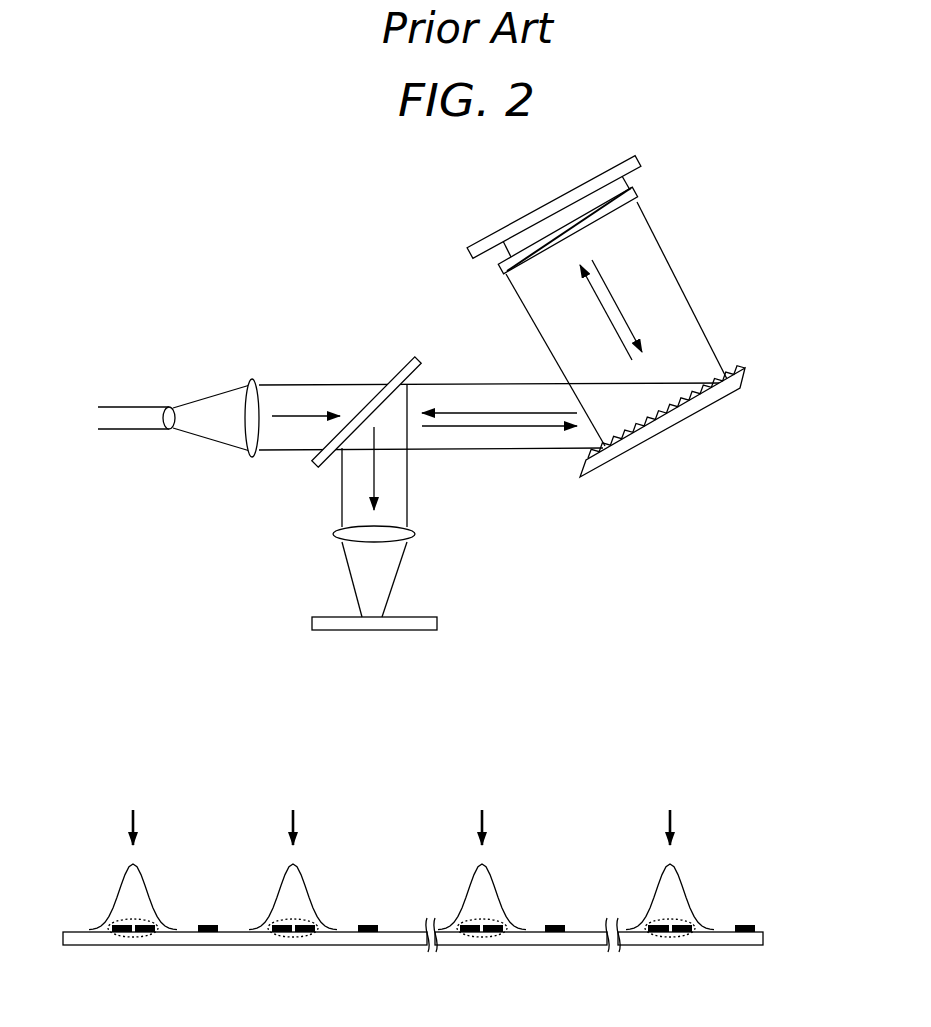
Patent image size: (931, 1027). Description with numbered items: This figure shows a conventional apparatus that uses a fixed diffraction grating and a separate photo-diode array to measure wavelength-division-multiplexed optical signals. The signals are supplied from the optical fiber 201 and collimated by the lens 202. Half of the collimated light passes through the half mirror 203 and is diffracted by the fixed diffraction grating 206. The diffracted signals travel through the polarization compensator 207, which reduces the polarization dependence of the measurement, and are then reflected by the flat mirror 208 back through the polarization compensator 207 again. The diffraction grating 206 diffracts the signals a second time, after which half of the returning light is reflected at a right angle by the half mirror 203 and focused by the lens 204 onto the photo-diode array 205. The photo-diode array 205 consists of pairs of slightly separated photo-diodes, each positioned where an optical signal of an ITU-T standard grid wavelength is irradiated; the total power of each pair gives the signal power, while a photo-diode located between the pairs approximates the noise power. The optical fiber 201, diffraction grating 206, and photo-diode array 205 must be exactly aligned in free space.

The optical fiber 201 is at (122, 405).
The lens 202 is at (252, 375).
The half mirror 203 is at (402, 363).
The lens 204 is at (417, 533).
The photo-diode array 205 is at (378, 632).
The fixed diffraction grating 206 is at (652, 433).
The polarization compensator 207 is at (638, 193).
The flat mirror 208 is at (508, 222).